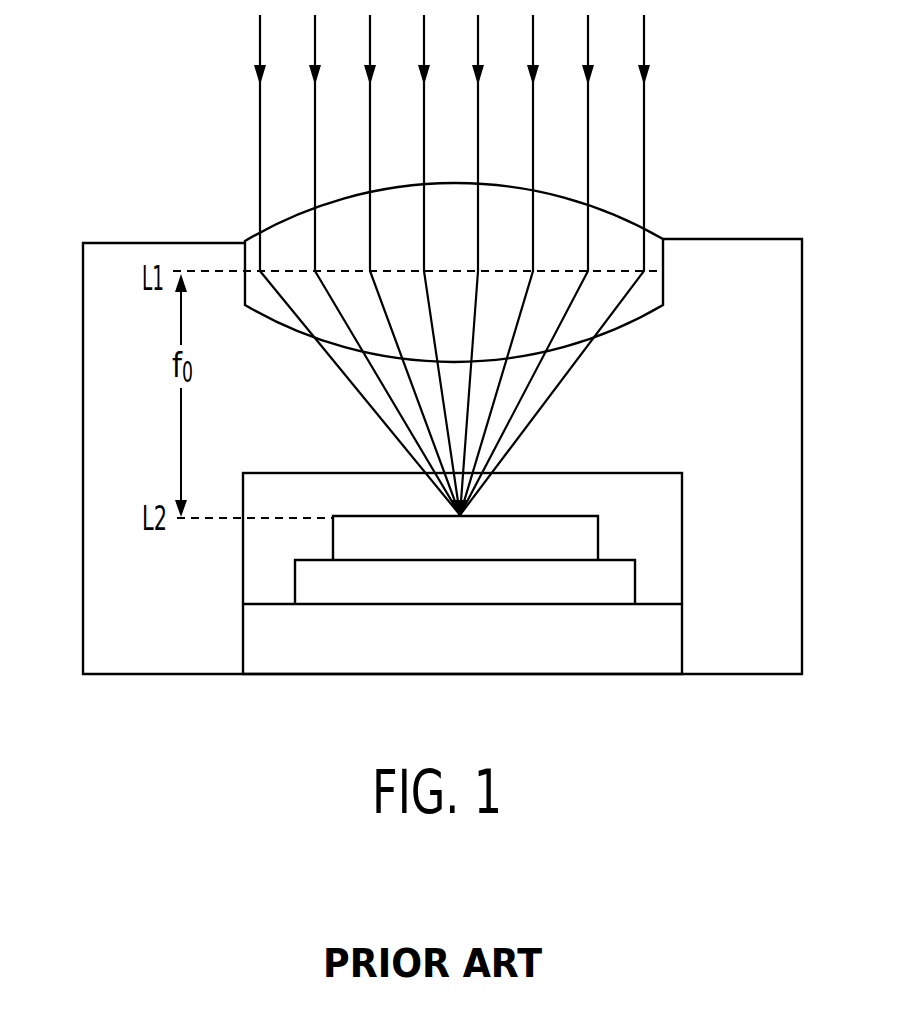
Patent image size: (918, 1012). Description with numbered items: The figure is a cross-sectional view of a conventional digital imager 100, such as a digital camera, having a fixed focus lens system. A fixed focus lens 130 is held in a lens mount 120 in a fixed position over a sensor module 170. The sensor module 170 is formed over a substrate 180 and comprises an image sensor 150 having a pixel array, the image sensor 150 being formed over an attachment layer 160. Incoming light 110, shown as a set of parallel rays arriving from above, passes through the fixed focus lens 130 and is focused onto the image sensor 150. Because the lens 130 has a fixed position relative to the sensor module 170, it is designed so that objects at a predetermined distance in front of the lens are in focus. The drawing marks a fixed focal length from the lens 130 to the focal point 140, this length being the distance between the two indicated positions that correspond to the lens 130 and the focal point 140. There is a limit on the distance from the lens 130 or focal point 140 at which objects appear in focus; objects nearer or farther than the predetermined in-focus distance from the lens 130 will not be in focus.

The digital imager 100 is at (132, 168).
The incoming light 110 is at (645, 103).
The lens mount 120 is at (757, 238).
The fixed focus lens 130 is at (667, 237).
The focal point 140 is at (448, 510).
The image sensor 150 is at (495, 527).
The attachment layer 160 is at (620, 585).
The sensor module 170 is at (668, 513).
The substrate 180 is at (595, 667).